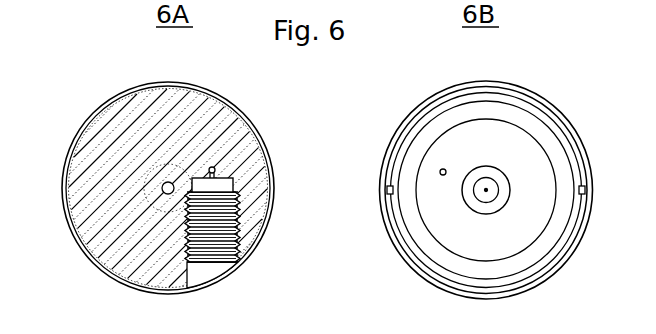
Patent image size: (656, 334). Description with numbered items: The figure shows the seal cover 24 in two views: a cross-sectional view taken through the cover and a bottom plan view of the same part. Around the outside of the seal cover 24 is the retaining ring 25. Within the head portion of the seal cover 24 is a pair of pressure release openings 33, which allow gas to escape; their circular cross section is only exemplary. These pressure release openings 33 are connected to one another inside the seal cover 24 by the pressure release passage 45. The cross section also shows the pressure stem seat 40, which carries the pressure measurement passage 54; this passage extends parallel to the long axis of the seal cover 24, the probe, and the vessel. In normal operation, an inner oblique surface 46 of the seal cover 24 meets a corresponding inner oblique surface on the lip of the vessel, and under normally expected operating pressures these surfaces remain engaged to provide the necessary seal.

In FIG. 6A, the seal cover 24 is at (108, 77).
In FIG. 6B, the seal cover 24 is at (563, 97).
In FIG. 6A, the retaining ring 25 is at (268, 236).
In FIG. 6B, the retaining ring 25 is at (595, 208).
In FIG. 6B, the pressure release openings 33 is at (388, 190).
In FIG. 6A, the pressure stem seat 40 is at (203, 269).
In FIG. 6B, the pressure release passage 45 is at (578, 174).
In FIG. 6B, the inner oblique surface 46 is at (565, 229).
In FIG. 6A, the pressure measurement passage 54 is at (216, 168).
In FIG. 6B, the pressure measurement passage 54 is at (440, 172).